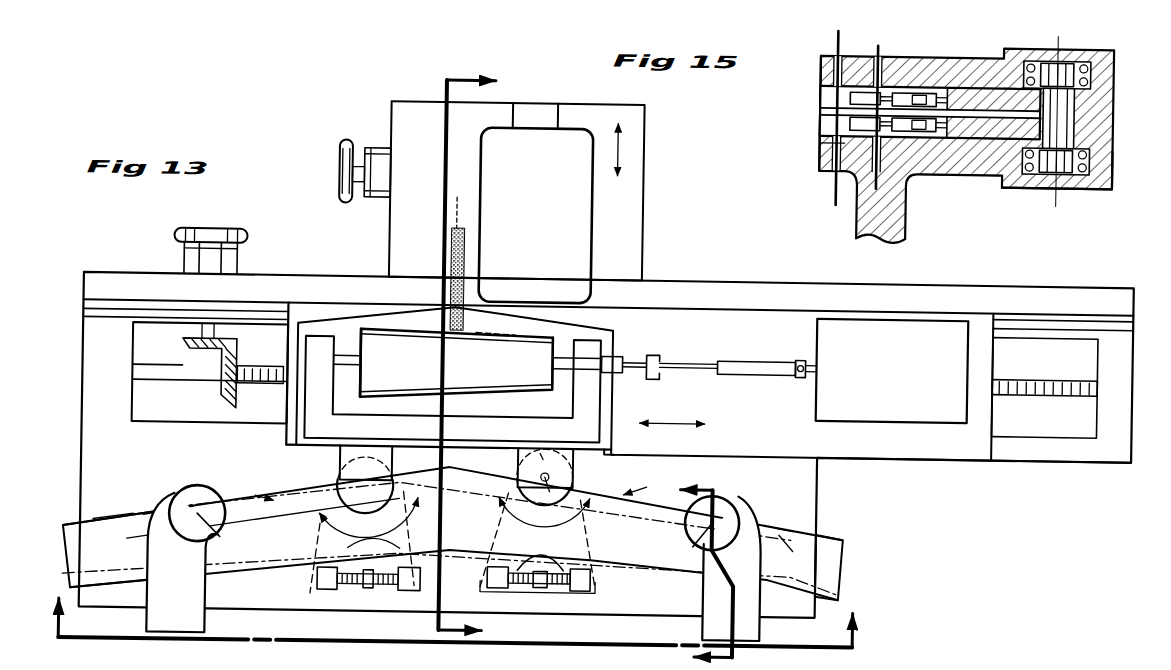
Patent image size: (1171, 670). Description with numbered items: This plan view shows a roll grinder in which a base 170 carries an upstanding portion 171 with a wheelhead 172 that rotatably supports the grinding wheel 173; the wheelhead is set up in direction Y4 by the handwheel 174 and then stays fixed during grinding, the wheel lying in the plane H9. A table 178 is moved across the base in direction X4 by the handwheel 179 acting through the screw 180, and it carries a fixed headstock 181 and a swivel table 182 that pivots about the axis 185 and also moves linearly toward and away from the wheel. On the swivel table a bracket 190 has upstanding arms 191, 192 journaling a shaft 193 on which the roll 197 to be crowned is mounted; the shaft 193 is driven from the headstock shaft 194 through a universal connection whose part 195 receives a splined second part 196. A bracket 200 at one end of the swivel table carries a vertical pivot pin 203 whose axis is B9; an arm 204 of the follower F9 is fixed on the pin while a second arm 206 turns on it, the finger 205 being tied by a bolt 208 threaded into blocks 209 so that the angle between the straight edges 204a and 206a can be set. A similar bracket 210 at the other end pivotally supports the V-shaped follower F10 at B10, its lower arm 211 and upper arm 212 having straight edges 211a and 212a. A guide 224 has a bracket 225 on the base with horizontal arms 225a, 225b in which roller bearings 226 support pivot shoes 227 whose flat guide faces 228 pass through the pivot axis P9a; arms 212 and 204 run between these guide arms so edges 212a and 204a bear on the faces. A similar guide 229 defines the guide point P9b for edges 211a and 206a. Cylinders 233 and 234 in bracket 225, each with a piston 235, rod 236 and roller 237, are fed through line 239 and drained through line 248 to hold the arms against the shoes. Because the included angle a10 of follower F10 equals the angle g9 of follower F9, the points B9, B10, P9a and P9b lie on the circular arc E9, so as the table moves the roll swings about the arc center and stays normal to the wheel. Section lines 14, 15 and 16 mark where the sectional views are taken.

In FIG. 13, the base 170 is at (89, 464).
In FIG. 13, the upstanding portion 171 is at (646, 130).
In FIG. 13, the wheelhead 172 is at (594, 229).
In FIG. 13, the grinding wheel 173 is at (454, 228).
In FIG. 13, the handwheel 174 is at (353, 142).
In FIG. 13, the table 178 is at (297, 449).
In FIG. 13, the handwheel 179 is at (250, 241).
In FIG. 13, the screw 180 is at (280, 394).
In FIG. 13, the headstock 181 is at (857, 416).
In FIG. 13, the swivel table 182 is at (619, 329).
In FIG. 13, the pivot axis 185 is at (463, 336).
In FIG. 13, the bracket 190 is at (613, 440).
In FIG. 13, the upstanding arm 191 is at (345, 388).
In FIG. 13, the upstanding arm 192 is at (440, 384).
In FIG. 13, the shaft 193 is at (629, 359).
In FIG. 13, the headstock shaft 194 is at (807, 352).
In FIG. 13, the universal connection part 195 is at (747, 369).
In FIG. 13, the universal connection second part 196 is at (688, 359).
In FIG. 13, the roll 197 is at (456, 356).
In FIG. 13, the bracket 200 is at (583, 458).
In FIG. 13, the vertical pivot pin 203 is at (546, 537).
In FIG. 13, the follower arm 204 is at (682, 495).
In FIG. 15, the follower arm 204 is at (975, 140).
In FIG. 13, the straight edge 204a is at (797, 531).
In FIG. 15, the straight edge 204a is at (1062, 135).
In FIG. 13, the finger 205 is at (495, 599).
In FIG. 13, the second follower arm 206 is at (512, 474).
In FIG. 13, the straight edge 206a is at (104, 512).
In FIG. 13, the bolt 208 is at (533, 596).
In FIG. 13, the block 209 is at (588, 593).
In FIG. 13, the bracket 210 is at (346, 462).
In FIG. 13, the lower arm 211 is at (76, 591).
In FIG. 13, the straight edge 211a is at (187, 502).
In FIG. 13, the upper arm 212 is at (852, 541).
In FIG. 15, the upper arm 212 is at (968, 86).
In FIG. 13, the straight edge 212a is at (842, 532).
In FIG. 15, the straight edge 212a is at (1062, 100).
In FIG. 13, the guide 224 is at (750, 507).
In FIG. 15, the guide 224 is at (1115, 190).
In FIG. 15, the bracket 225 is at (957, 235).
In FIG. 15, the horizontal arm 225a is at (821, 60).
In FIG. 15, the horizontal arm 225b is at (972, 175).
In FIG. 15, the roller bearing 226 is at (1110, 60).
In FIG. 15, the pivot shoe 227 is at (1076, 112).
In FIG. 15, the flat guide face 228 is at (977, 108).
In FIG. 13, the guide 229 is at (220, 467).
In FIG. 15, the cylinder 233 is at (856, 58).
In FIG. 15, the cylinder 234 is at (827, 147).
In FIG. 15, the piston 235 is at (845, 173).
In FIG. 15, the rod 236 is at (905, 66).
In FIG. 15, the roller 237 is at (968, 178).
In FIG. 15, the line 239 is at (837, 40).
In FIG. 15, the line 248 is at (877, 58).
In FIG. 13, the section line 14— 14 is at (449, 355).
In FIG. 13, the section line 15— 15 is at (722, 574).
In FIG. 13, the section line 16— 16 is at (454, 631).
In FIG. 13, the plane of grinding wheel H9 is at (459, 210).
In FIG. 13, the direction Y4 is at (607, 149).
In FIG. 13, the direction X4 is at (672, 412).
In FIG. 13, the pivot axis B9 is at (546, 452).
In FIG. 13, the follower F9 is at (642, 480).
In FIG. 13, the follower F10 is at (250, 488).
In FIG. 13, the pivot connection B10 is at (333, 518).
In FIG. 13, the circular arc E9 is at (142, 545).
In FIG. 13, the guide point P9a is at (704, 531).
In FIG. 15, the guide point P9a is at (1058, 205).
In FIG. 13, the guide point P9b is at (229, 541).
In FIG. 13, the angle α10 a10 is at (368, 517).
In FIG. 13, the angle α9 g9 is at (544, 518).